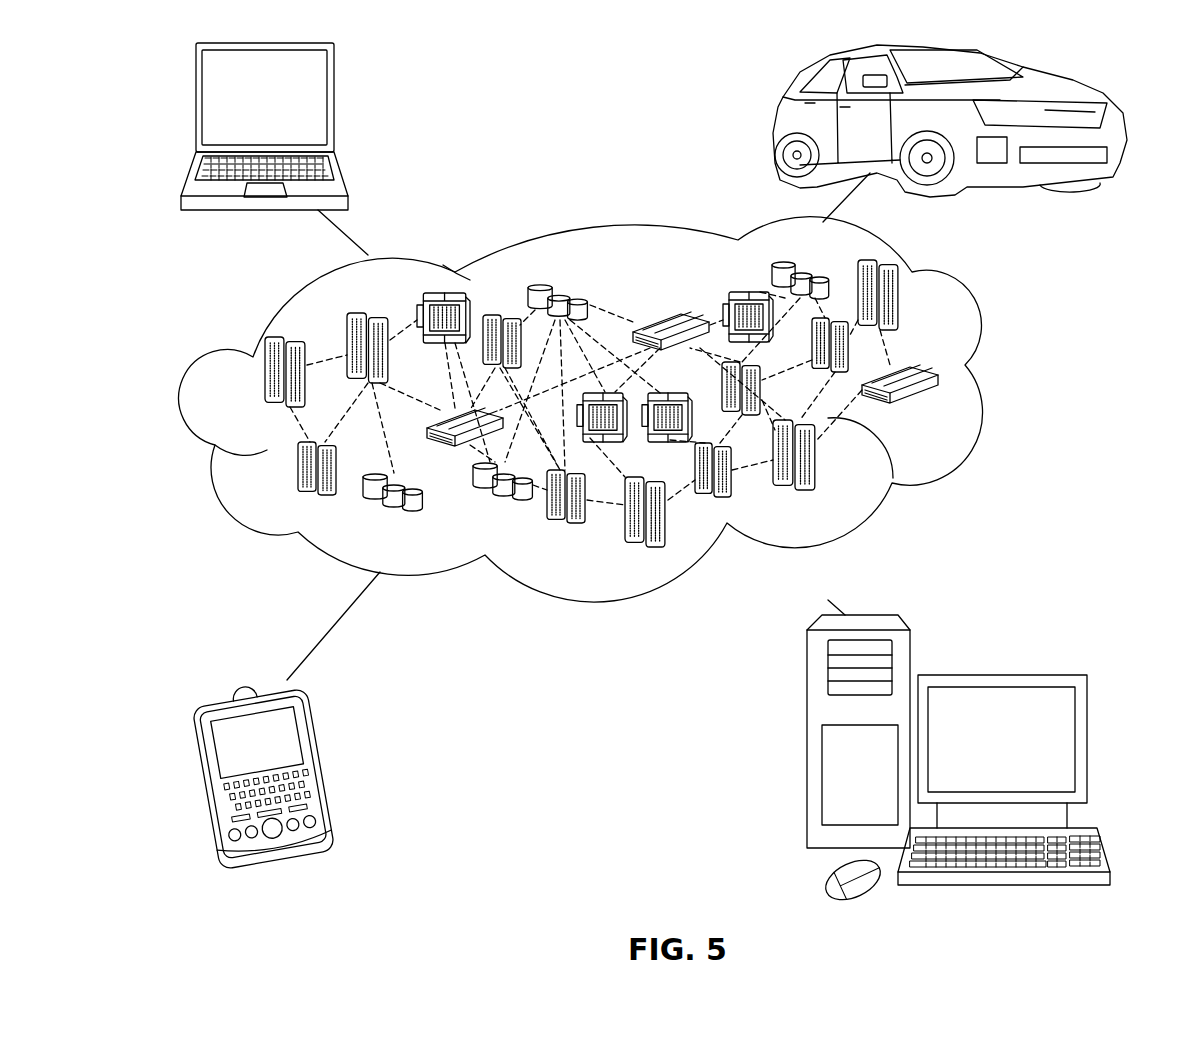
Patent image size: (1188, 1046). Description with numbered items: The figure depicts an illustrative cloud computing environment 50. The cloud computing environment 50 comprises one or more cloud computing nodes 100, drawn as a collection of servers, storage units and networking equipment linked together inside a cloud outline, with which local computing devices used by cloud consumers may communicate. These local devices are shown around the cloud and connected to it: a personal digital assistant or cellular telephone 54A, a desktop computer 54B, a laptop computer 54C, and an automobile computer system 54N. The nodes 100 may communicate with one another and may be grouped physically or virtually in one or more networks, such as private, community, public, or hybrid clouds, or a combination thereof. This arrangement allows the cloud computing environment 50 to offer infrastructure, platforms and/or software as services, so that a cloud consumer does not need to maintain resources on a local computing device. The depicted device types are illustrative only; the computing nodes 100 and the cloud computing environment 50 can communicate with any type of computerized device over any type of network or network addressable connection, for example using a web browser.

The cloud computing environment 50 is at (998, 377).
The cloud computing nodes 100 is at (940, 412).
The personal digital assistant or cellular telephone 54A is at (325, 770).
The desktop computer 54B is at (998, 675).
The laptop computer 54C is at (334, 107).
The automobile computer system 54N is at (775, 125).